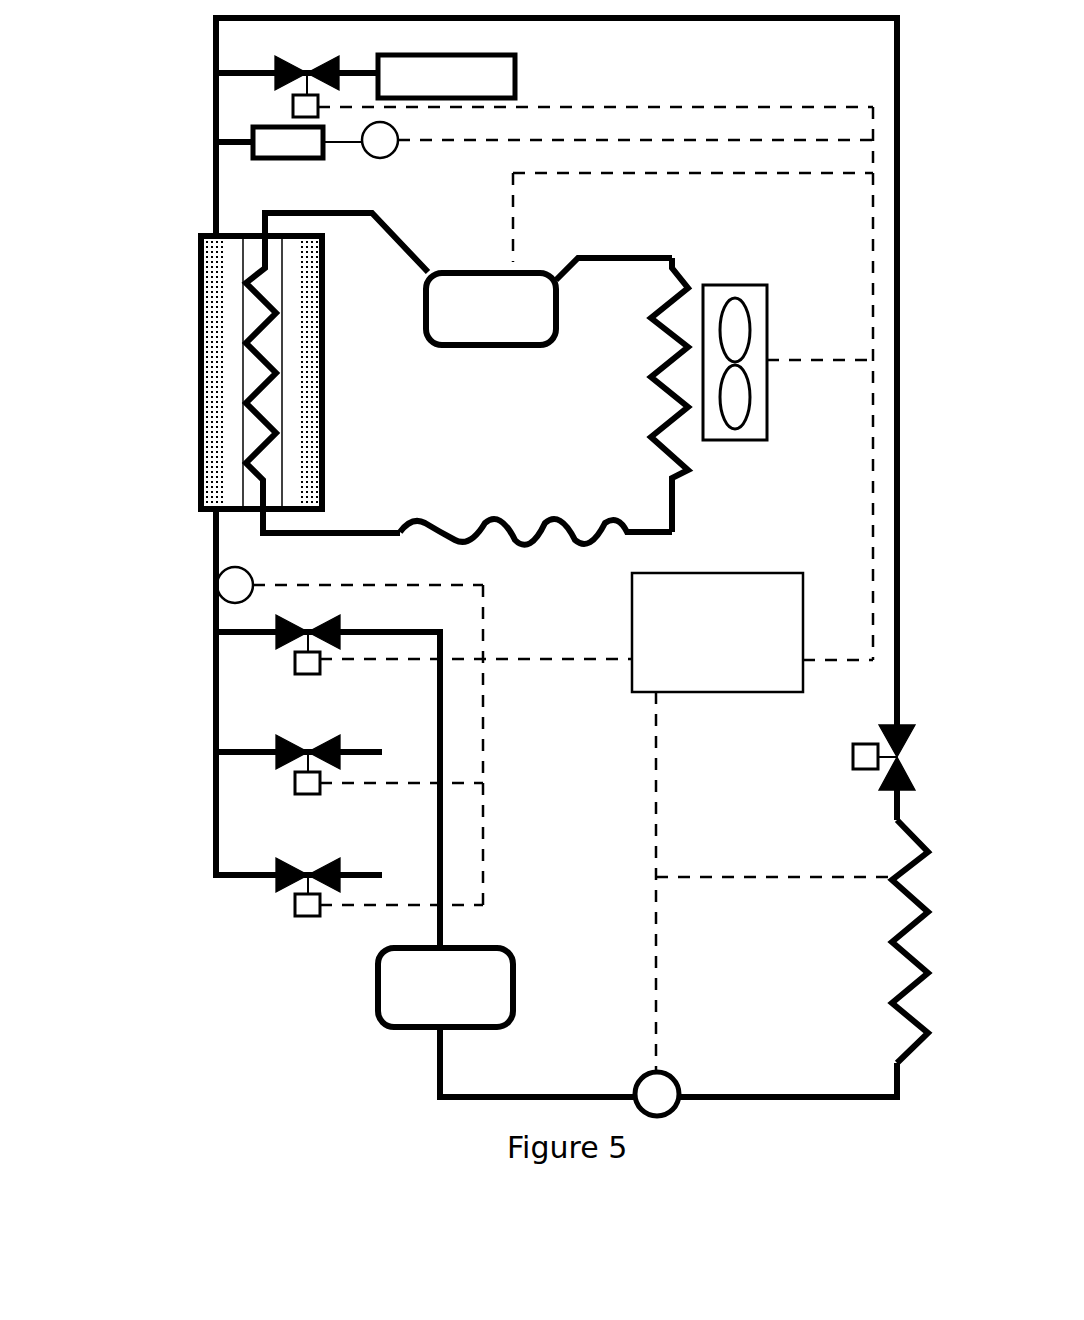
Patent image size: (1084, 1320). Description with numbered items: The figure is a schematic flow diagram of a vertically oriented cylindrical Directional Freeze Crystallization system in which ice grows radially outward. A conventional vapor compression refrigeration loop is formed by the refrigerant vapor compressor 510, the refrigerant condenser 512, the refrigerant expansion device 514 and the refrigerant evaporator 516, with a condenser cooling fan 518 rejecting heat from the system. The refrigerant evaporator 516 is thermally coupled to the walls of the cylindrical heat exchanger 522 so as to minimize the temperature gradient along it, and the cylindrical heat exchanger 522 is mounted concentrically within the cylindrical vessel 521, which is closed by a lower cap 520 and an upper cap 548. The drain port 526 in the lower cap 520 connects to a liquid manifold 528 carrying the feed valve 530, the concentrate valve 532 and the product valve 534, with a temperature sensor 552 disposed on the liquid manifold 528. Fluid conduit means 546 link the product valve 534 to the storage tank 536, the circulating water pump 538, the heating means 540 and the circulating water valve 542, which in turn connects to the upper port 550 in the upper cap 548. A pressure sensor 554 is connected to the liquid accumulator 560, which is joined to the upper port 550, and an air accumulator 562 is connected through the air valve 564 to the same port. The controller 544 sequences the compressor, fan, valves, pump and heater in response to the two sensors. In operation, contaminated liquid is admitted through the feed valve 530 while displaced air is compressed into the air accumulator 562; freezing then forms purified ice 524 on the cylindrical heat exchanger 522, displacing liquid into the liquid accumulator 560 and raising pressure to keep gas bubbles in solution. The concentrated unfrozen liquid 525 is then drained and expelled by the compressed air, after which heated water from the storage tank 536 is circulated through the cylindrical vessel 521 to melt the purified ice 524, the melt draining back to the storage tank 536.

The refrigerant vapor compressor 510 is at (503, 268).
The refrigerant condenser 512 is at (665, 405).
The refrigerant expansion device 514 is at (540, 525).
The refrigerant evaporator 516 is at (278, 336).
The condenser cooling fan 518 is at (765, 440).
The lower cap 520 is at (317, 520).
The cylindrical vessel 521 is at (323, 400).
The cylindrical heat exchanger 522 is at (278, 458).
The purified ice 524 is at (237, 435).
The concentrated unfrozen liquid 525 is at (303, 373).
The drain port 526 is at (210, 515).
The liquid manifold 528 is at (213, 628).
The feed valve 530 is at (330, 870).
The concentrate valve 532 is at (330, 745).
The product valve 534 is at (330, 625).
The storage tank 536 is at (378, 977).
The circulating water pump 538 is at (648, 1068).
The heating means 540 is at (897, 895).
The circulating water valve 542 is at (890, 790).
The controller 544 is at (800, 692).
The fluid conduit means 546 is at (897, 30).
The upper cap 548 is at (248, 233).
The upper port 550 is at (212, 233).
The temperature sensor 552 is at (253, 583).
The pressure sensor 554 is at (392, 155).
The liquid accumulator 560 is at (315, 160).
The air accumulator 562 is at (515, 80).
The air valve 564 is at (312, 62).